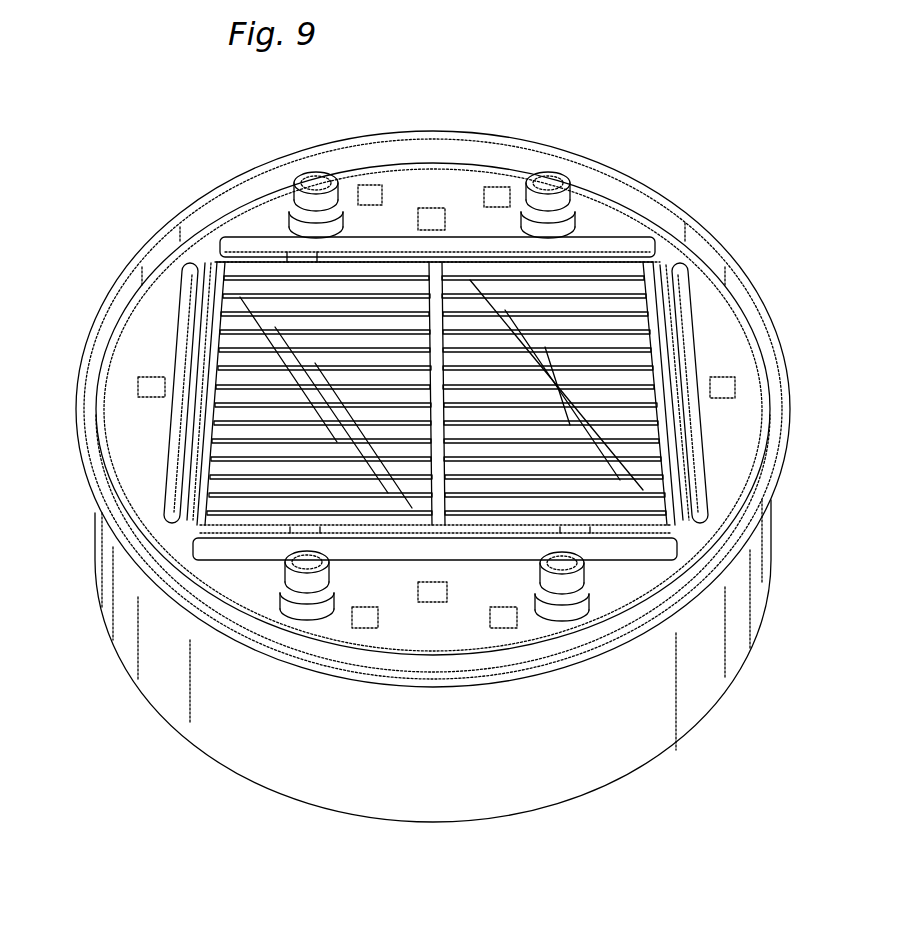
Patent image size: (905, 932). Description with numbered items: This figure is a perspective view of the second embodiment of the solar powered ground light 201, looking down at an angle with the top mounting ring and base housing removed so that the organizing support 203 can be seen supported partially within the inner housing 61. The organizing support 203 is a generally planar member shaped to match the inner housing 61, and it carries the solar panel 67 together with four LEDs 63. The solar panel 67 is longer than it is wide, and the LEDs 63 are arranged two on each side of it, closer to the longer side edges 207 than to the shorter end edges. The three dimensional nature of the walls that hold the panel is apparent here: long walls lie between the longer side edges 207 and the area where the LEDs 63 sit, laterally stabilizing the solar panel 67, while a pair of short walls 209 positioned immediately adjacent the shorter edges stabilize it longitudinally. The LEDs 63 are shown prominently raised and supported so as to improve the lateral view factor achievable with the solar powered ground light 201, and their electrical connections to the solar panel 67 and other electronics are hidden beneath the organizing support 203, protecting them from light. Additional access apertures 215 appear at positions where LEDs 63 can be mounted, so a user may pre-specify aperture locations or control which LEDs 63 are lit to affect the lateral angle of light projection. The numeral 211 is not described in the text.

The inner housing 61 is at (439, 476).
The LEDs 63 is at (315, 182).
The solar panel 67 is at (677, 523).
The solar powered ground light 201 is at (130, 447).
The organizing support 203 is at (647, 190).
The longer side edges 207 is at (233, 243).
The short walls 209 is at (187, 293).
The bracket 211 is at (662, 265).
The additional access apertures 215 is at (368, 192).